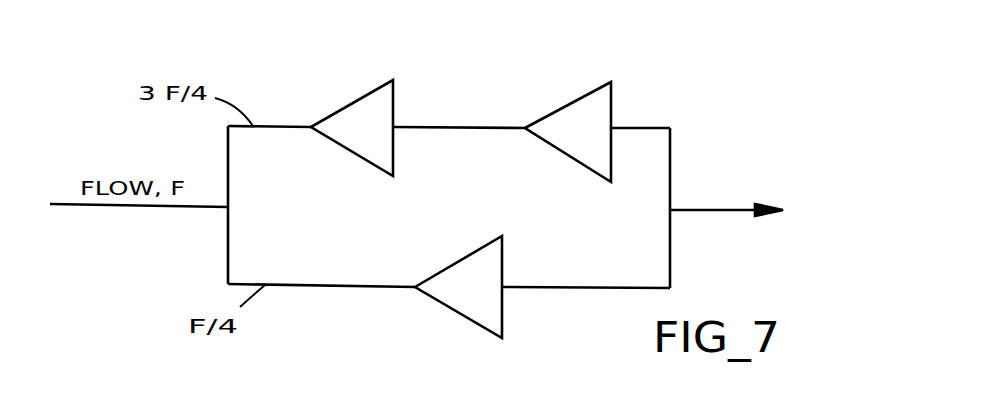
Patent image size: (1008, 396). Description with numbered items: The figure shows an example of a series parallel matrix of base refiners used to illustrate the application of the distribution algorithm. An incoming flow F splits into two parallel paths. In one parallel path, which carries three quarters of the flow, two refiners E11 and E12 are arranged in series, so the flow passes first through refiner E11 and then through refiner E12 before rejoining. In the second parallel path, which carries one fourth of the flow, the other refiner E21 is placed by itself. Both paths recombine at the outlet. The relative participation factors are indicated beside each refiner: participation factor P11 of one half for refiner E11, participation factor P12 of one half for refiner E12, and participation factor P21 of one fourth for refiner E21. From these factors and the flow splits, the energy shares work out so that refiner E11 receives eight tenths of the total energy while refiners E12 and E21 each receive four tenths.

The refiner E11 is at (352, 128).
The refiner E12 is at (568, 132).
The refiner E21 is at (458, 287).
The relative participation factor P11 is at (328, 47).
The relative participation factor P12 is at (564, 48).
The relative participation factor P21 is at (402, 350).